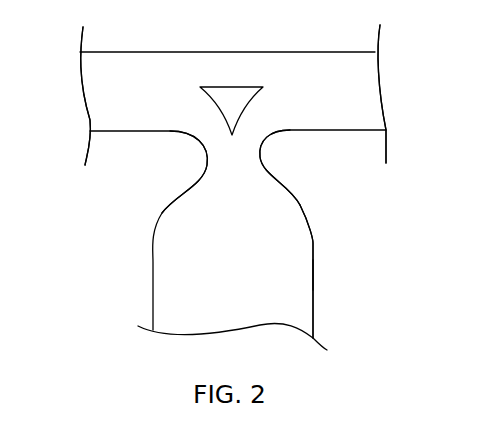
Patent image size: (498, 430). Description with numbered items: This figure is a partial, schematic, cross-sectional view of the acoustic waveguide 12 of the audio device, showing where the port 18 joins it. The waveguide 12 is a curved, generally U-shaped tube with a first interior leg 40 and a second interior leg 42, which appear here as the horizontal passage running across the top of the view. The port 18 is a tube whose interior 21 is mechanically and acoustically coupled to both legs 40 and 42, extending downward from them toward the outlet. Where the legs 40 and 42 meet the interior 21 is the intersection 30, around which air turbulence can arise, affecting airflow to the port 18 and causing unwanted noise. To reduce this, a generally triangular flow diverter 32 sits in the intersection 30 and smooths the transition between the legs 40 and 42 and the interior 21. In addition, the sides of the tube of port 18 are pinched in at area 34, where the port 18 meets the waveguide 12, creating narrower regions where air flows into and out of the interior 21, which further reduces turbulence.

The acoustic waveguide 12 is at (140, 52).
The port 18 is at (313, 287).
The interior 21 is at (302, 243).
The intersection 30 is at (181, 148).
The flow diverter 32 is at (243, 87).
The area 34 is at (250, 163).
The first interior leg 40 is at (95, 125).
The second interior leg 42 is at (367, 82).